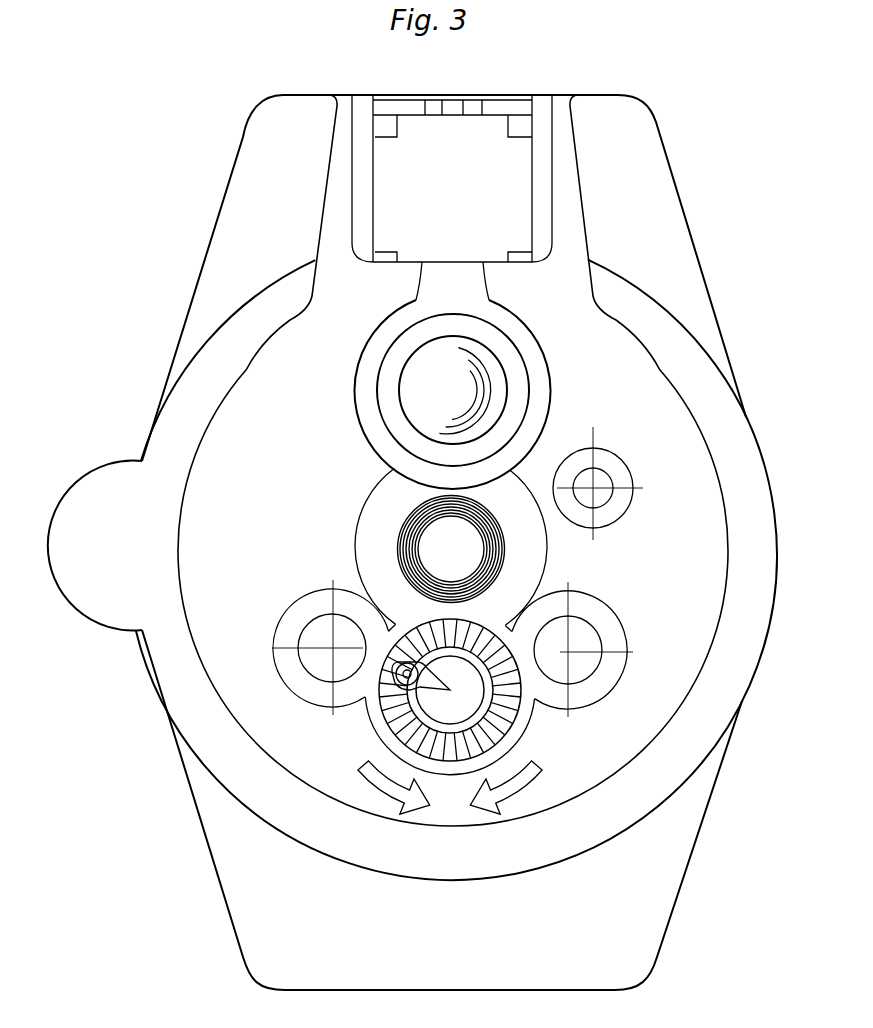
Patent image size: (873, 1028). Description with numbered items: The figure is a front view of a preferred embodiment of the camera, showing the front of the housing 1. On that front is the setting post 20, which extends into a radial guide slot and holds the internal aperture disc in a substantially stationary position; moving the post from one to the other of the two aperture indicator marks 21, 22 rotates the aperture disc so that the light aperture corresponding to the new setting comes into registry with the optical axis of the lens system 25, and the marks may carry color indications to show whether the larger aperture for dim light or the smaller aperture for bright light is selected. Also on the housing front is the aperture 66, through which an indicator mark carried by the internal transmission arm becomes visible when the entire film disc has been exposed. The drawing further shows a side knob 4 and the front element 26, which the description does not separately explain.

The housing 1 is at (654, 129).
The side knob 4 is at (88, 486).
The lens system 25 is at (480, 367).
The objective lens 26 is at (468, 558).
The aperture 66 is at (605, 481).
The aperture indicator mark 21 is at (450, 690).
The aperture indicator mark 22 is at (450, 690).
The setting post 20 is at (418, 681).